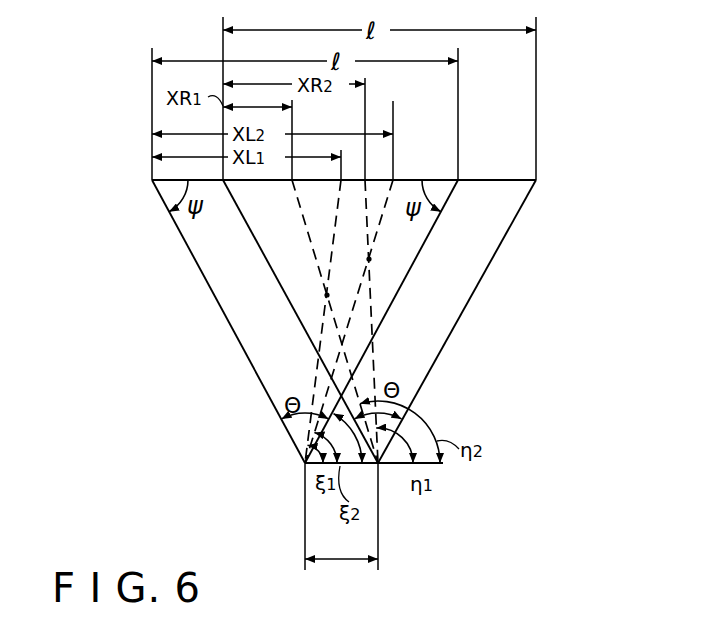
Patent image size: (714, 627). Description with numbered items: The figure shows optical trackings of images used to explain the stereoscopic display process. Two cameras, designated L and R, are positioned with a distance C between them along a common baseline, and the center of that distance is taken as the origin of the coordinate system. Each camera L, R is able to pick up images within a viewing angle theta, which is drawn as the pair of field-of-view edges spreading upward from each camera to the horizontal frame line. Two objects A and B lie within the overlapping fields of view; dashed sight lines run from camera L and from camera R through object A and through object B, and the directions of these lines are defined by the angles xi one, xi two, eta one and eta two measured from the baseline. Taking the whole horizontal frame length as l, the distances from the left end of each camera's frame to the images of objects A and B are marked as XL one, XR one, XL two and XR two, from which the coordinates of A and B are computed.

The object A is at (327, 295).
The object B is at (369, 259).
The camera L is at (294, 516).
The camera R is at (367, 516).
The distance between cameras C is at (341, 575).